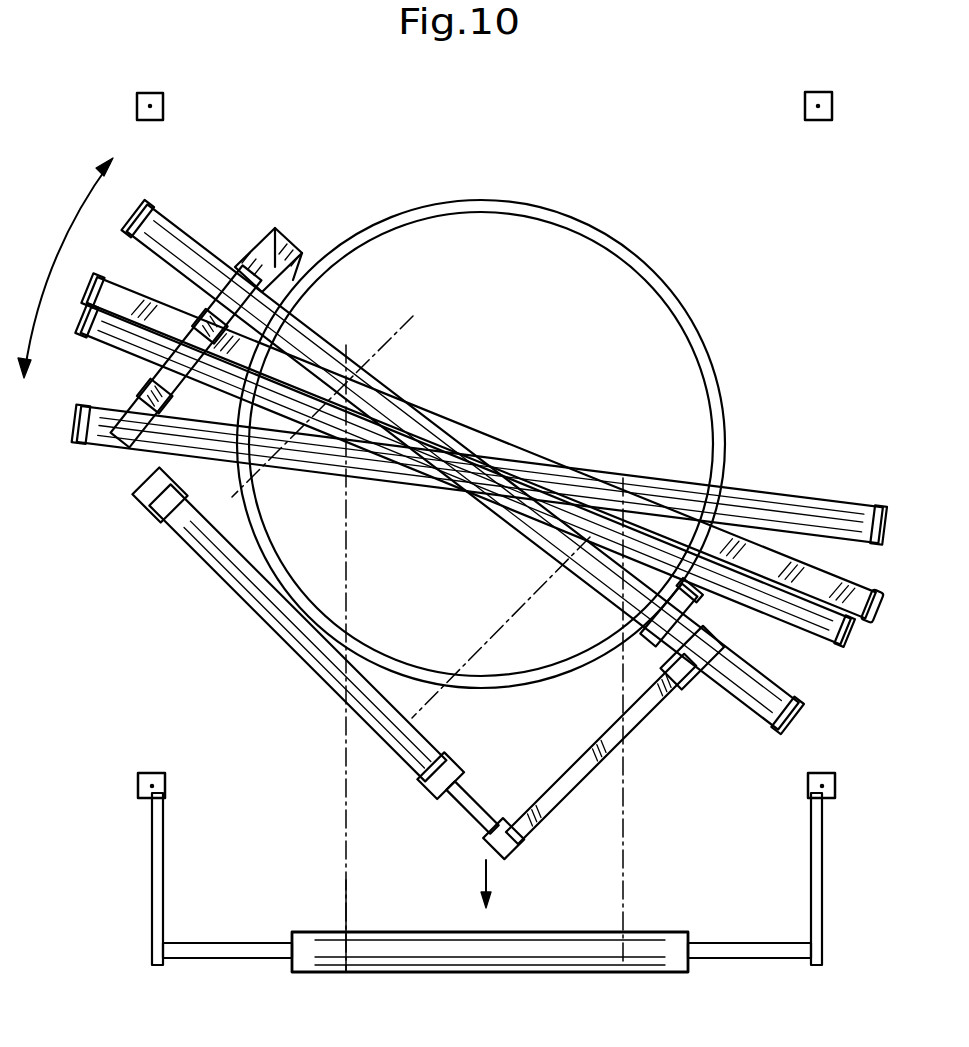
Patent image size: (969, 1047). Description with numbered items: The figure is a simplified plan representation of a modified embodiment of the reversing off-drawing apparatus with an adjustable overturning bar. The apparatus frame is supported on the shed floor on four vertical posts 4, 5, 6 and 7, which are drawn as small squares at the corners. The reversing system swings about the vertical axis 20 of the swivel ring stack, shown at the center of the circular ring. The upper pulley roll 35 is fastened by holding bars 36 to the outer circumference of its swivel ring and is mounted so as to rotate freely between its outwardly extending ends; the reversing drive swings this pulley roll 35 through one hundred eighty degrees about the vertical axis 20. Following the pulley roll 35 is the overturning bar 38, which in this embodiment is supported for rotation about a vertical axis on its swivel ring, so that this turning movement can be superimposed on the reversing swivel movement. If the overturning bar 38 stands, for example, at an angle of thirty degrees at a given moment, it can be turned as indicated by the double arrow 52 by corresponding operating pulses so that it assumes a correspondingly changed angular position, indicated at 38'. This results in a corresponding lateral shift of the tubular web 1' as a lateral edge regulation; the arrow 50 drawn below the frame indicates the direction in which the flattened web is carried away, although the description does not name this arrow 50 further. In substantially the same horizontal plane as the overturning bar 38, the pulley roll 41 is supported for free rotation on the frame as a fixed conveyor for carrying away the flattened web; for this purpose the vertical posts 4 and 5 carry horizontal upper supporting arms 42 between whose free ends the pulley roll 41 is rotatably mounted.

The vertical axis 20 is at (480, 447).
The overturning bar 38 is at (453, 460).
The changed angular position of the overturning bar 38' is at (464, 389).
The upper pulley roll 35 is at (175, 503).
The holding bars 36 is at (270, 253).
The double arrow 52 is at (78, 217).
The vertical post 6 is at (157, 95).
The vertical post 7 is at (810, 97).
The vertical post 4 is at (147, 788).
The vertical post 5 is at (827, 792).
The horizontal upper supporting arms 42 is at (158, 885).
The pulley roll 41 is at (427, 950).
The tubular web 1' is at (307, 960).
The feed direction arrow 50 is at (490, 887).